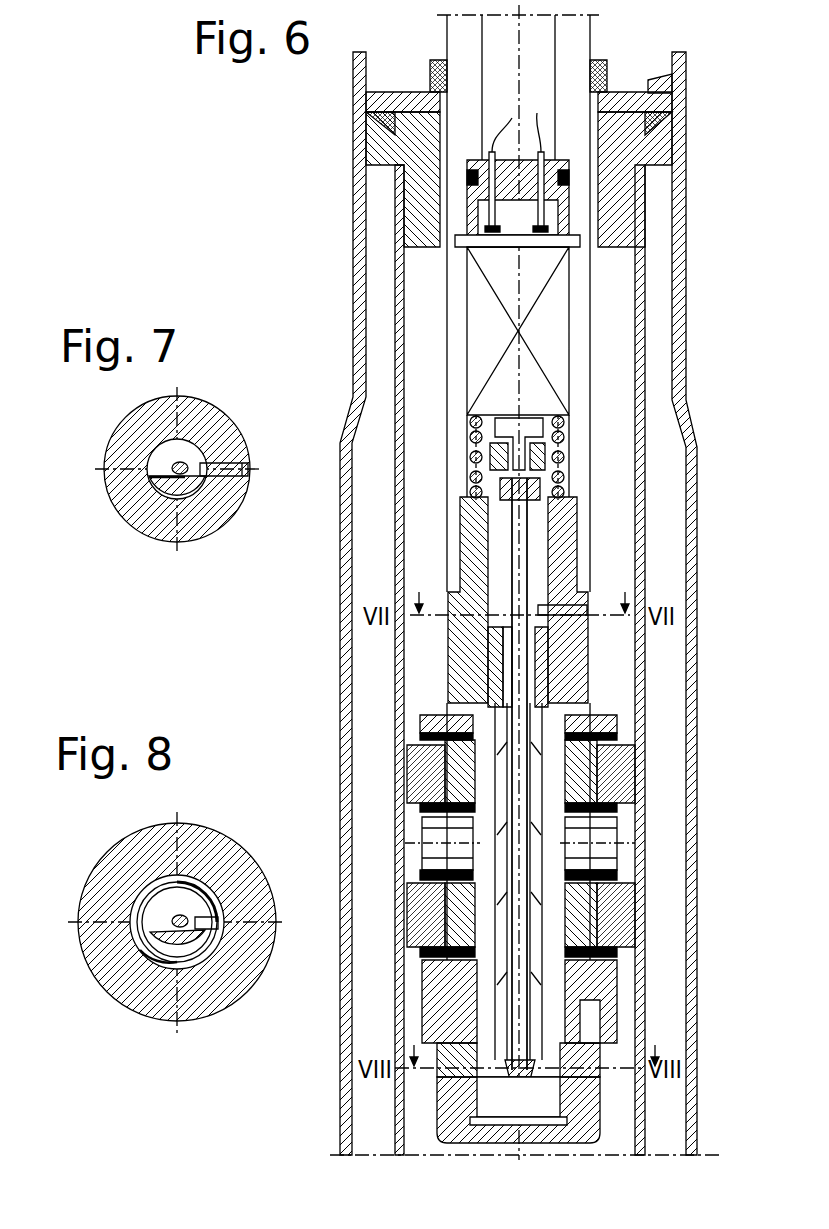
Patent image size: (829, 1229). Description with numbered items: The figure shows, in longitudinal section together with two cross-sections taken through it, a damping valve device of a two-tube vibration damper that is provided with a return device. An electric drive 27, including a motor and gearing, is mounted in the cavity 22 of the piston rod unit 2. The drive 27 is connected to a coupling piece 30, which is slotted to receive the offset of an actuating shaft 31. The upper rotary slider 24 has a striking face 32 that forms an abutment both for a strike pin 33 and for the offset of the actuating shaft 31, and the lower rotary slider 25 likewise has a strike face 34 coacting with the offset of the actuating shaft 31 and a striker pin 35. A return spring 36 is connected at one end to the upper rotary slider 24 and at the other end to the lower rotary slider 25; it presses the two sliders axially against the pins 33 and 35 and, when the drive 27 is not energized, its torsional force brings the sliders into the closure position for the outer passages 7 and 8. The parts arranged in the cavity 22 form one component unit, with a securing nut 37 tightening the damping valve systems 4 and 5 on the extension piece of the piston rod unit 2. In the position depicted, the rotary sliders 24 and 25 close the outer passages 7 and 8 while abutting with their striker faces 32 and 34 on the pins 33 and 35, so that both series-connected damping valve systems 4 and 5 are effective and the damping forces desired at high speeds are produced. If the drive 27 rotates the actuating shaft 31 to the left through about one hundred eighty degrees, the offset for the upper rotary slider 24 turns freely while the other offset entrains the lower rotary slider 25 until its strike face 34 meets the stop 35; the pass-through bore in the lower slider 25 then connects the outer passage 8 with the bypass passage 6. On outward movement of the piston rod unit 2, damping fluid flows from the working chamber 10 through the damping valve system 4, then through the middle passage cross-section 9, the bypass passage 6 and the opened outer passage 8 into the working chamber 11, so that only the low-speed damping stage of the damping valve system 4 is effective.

In FIG. 6, the piston rod unit 2 is at (590, 571).
In FIG. 7, the piston rod unit 2 is at (200, 425).
In FIG. 8, the piston rod unit 2 is at (205, 880).
In FIG. 6, the damping valve system 4 is at (453, 784).
In FIG. 6, the damping valve system 5 is at (456, 930).
In FIG. 6, the bypass passage 6 is at (575, 950).
In FIG. 6, the outer passage 7 is at (573, 688).
In FIG. 6, the outer passage 8 is at (560, 1005).
In FIG. 6, the middle passage cross-section 9 is at (560, 835).
In FIG. 6, the working chamber 10 is at (627, 722).
In FIG. 6, the working chamber 11 is at (620, 1148).
In FIG. 6, the cavity 22 is at (560, 470).
In FIG. 6, the upper rotary slider 24 is at (500, 633).
In FIG. 6, the lower rotary slider 25 is at (490, 1045).
In FIG. 6, the electric drive 27 is at (553, 300).
In FIG. 6, the coupling piece 30 is at (548, 440).
In FIG. 6, the actuating shaft 31 is at (527, 523).
In FIG. 7, the actuating shaft 31 is at (175, 468).
In FIG. 8, the actuating shaft 31 is at (170, 905).
In FIG. 7, the striking face 32 is at (158, 476).
In FIG. 6, the strike pin 33 is at (580, 618).
In FIG. 7, the strike pin 33 is at (220, 474).
In FIG. 6, the strike face 34 is at (503, 1085).
In FIG. 8, the strike face 34 is at (140, 950).
In FIG. 6, the striker pin 35 is at (555, 1062).
In FIG. 8, the striker pin 35 is at (222, 921).
In FIG. 6, the return spring 36 is at (540, 885).
In FIG. 6, the securing nut 37 is at (590, 1108).
In FIG. 8, the securing nut 37 is at (228, 975).